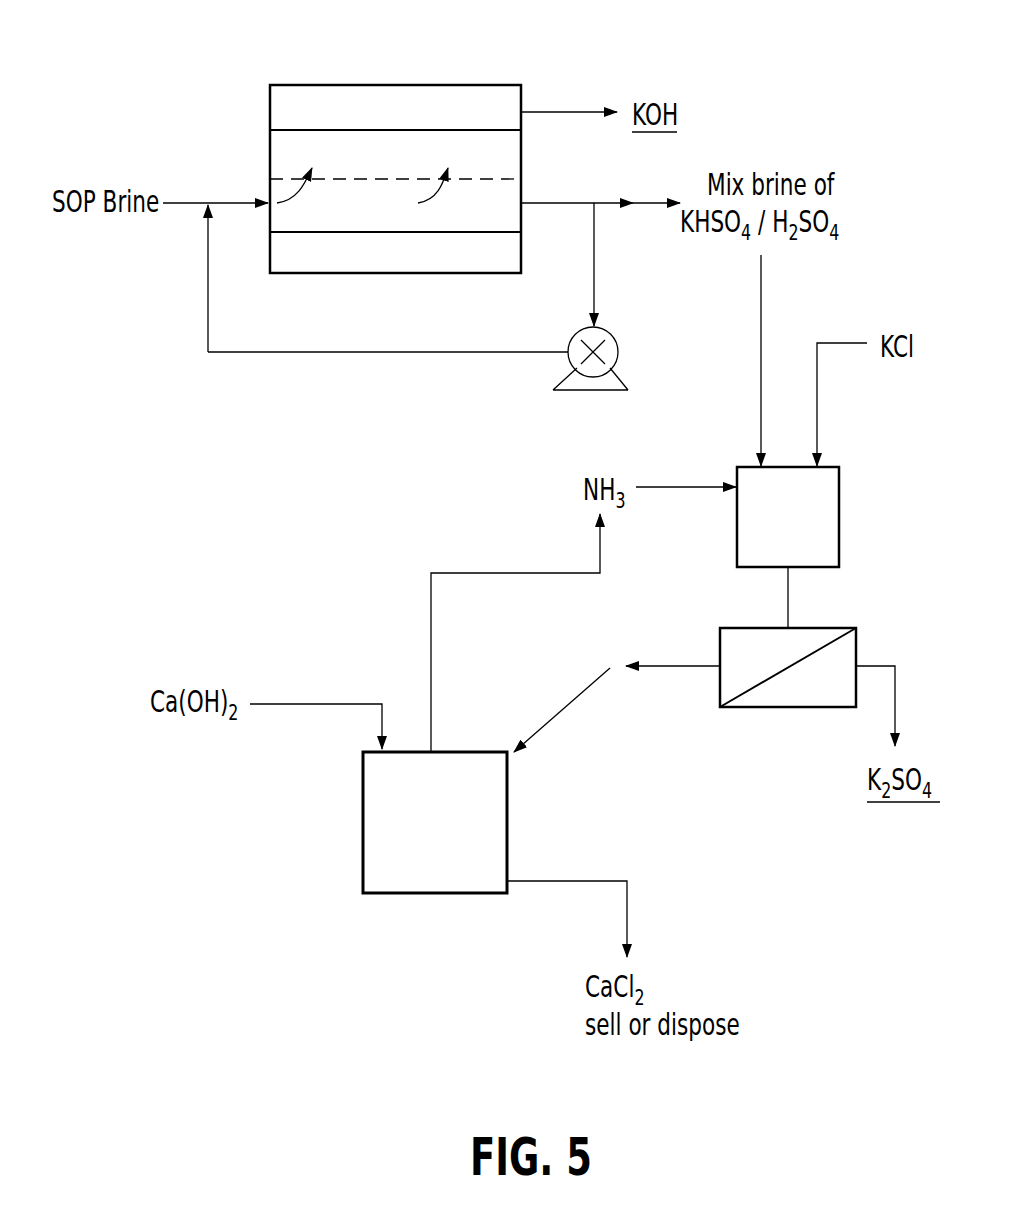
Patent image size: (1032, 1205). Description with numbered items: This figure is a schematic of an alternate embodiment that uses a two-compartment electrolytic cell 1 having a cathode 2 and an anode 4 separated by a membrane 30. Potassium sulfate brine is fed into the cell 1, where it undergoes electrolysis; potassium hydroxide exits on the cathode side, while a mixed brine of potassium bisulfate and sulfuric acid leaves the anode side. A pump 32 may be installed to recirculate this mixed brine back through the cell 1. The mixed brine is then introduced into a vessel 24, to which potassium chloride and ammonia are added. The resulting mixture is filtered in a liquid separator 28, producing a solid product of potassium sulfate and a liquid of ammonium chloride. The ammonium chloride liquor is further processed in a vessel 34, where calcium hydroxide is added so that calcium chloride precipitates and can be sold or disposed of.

The cell 1 is at (288, 80).
The cathode 2 is at (468, 97).
The anode 4 is at (320, 252).
The membrane 30 is at (495, 179).
The pump 32 is at (611, 339).
The vessel 24 is at (806, 531).
The liquid separator 28 is at (849, 650).
The vessel 34 is at (382, 861).